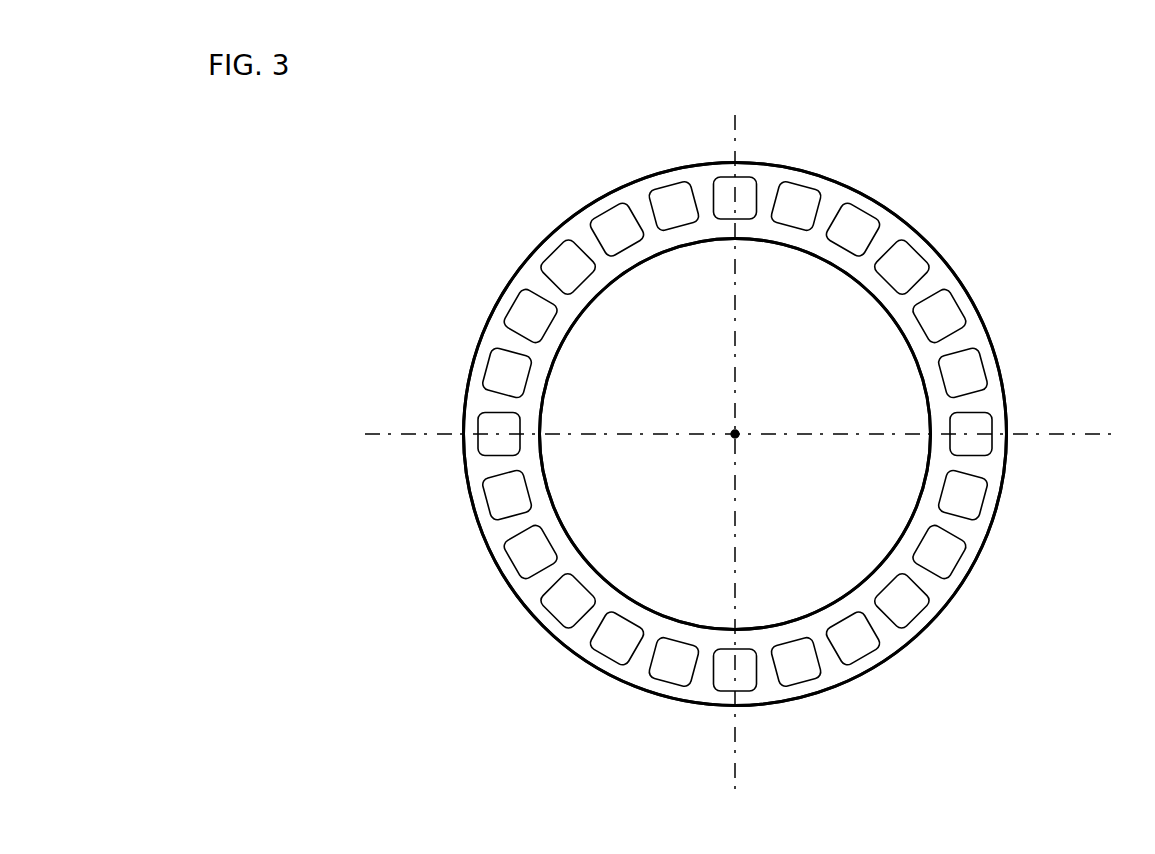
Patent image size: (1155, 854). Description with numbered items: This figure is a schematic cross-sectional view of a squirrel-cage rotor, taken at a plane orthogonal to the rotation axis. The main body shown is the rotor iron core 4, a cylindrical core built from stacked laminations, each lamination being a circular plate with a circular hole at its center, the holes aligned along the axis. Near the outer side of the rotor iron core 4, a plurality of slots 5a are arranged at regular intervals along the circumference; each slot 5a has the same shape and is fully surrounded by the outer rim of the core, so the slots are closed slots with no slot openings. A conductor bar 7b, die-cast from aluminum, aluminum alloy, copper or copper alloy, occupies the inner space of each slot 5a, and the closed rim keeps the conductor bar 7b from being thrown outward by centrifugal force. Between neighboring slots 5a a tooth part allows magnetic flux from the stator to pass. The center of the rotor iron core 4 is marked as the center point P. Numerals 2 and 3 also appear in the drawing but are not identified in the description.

The rotor 2 is at (772, 527).
The stator 3 is at (1003, 241).
The rotor iron core 4 is at (637, 177).
The slot 5a is at (548, 258).
The conductor bar 7b is at (858, 225).
The center point P is at (743, 437).